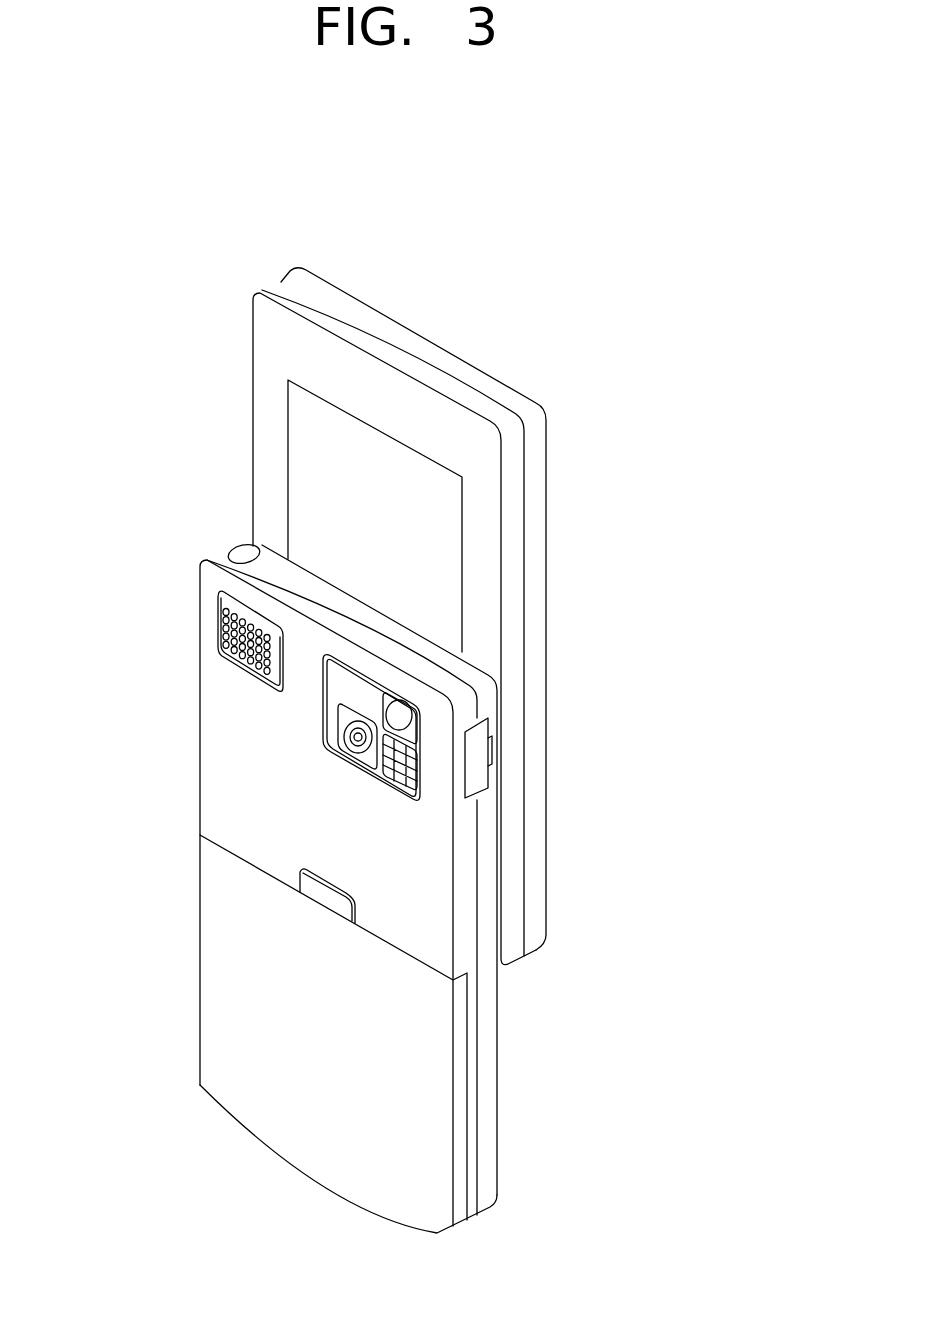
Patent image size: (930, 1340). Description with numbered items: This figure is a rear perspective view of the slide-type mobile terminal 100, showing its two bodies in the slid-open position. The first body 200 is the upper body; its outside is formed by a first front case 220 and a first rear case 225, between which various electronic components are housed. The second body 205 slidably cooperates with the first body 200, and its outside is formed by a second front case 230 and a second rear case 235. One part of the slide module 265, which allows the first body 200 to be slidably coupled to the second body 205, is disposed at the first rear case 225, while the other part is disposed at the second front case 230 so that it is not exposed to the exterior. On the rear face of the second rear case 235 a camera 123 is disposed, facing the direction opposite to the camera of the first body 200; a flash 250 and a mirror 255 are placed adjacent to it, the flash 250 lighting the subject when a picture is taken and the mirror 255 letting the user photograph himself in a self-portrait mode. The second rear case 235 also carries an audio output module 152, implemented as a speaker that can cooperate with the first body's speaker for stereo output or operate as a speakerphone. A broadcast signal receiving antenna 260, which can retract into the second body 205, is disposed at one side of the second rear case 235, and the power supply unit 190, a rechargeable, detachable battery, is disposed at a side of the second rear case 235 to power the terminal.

The mobile terminal 100 is at (565, 331).
The first body 200 is at (222, 371).
The second body 205 is at (178, 741).
The first front case 220 is at (296, 279).
The first rear case 225 is at (275, 291).
The slide module 265 is at (294, 467).
The broadcast signal receiving antenna 260 is at (238, 549).
The audio output module 152 is at (215, 636).
The power supply unit 190 is at (216, 927).
The flash 250 is at (398, 770).
The camera 123 is at (360, 738).
The mirror 255 is at (398, 714).
The second rear case 235 is at (463, 937).
The second front case 230 is at (488, 998).